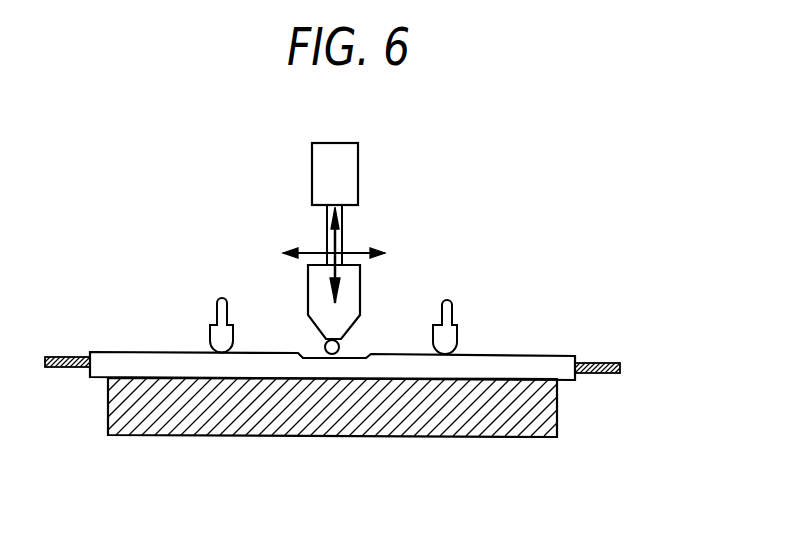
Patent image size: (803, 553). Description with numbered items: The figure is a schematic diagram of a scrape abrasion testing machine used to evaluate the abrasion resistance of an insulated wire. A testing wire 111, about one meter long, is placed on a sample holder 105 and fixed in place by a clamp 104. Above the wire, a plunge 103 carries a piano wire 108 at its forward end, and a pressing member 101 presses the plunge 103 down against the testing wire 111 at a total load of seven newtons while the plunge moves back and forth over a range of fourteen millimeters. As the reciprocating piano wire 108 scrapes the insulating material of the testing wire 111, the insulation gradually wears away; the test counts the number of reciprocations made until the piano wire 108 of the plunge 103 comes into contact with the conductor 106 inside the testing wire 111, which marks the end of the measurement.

The pressing member 101 is at (352, 172).
The plunge 103 is at (352, 280).
The clamp 104 is at (447, 342).
The sample holder 105 is at (472, 437).
The conductor 106 is at (597, 362).
The piano wire 108 is at (340, 344).
The testing wire 111 is at (147, 360).